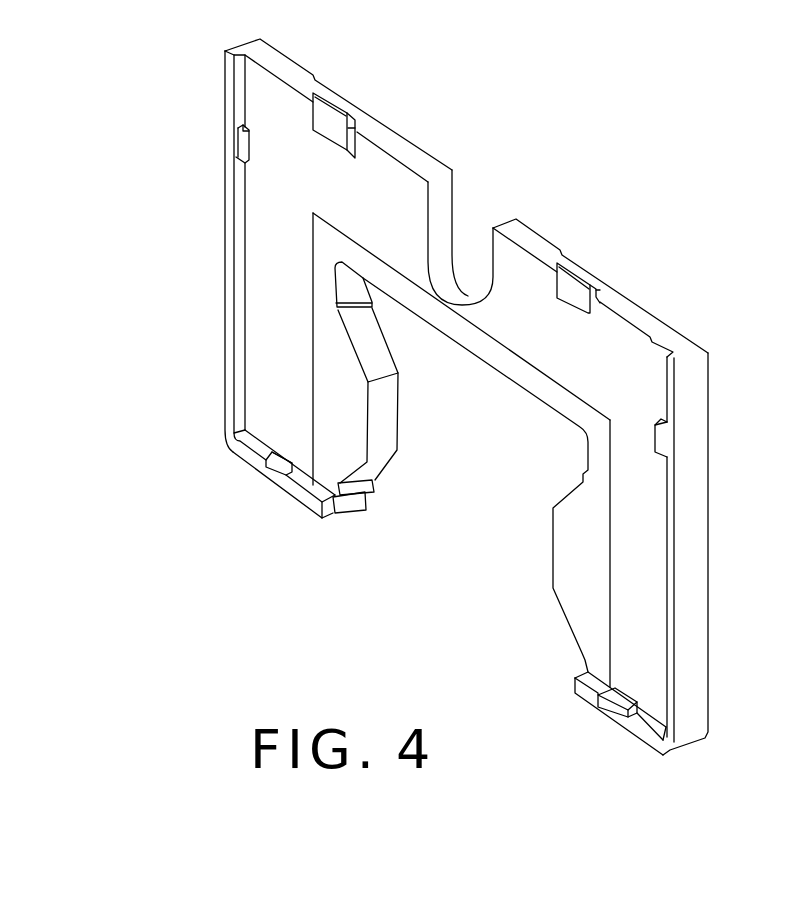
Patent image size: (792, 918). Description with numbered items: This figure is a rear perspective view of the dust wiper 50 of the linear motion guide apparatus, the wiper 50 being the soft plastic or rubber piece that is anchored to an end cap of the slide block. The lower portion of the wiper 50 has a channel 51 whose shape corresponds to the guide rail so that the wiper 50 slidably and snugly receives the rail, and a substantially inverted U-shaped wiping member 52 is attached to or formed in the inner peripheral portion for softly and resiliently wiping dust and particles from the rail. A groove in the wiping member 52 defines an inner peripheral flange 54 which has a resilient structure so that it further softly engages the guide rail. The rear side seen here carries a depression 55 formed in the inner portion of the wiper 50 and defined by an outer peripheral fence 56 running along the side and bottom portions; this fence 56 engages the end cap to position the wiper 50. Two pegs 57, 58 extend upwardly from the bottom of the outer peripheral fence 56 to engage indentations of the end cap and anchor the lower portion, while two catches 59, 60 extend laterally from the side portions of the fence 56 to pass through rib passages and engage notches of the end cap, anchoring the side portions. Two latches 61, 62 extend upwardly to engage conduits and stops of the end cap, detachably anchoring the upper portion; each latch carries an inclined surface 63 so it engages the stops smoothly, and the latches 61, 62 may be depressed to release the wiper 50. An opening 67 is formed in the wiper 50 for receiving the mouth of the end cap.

The wiper 50 is at (677, 208).
The channel 51 is at (420, 572).
The wiping member 52 is at (340, 435).
The inner peripheral flange 54 is at (392, 447).
The depression 55 is at (255, 353).
The outer peripheral fence 56 is at (667, 622).
The peg 57 is at (615, 705).
The peg 58 is at (282, 465).
The catch 59 is at (655, 440).
The catch 60 is at (245, 152).
The latch 61 is at (597, 312).
The latch 62 is at (355, 137).
The inclined surface 63 is at (573, 272).
The opening 67 is at (477, 215).